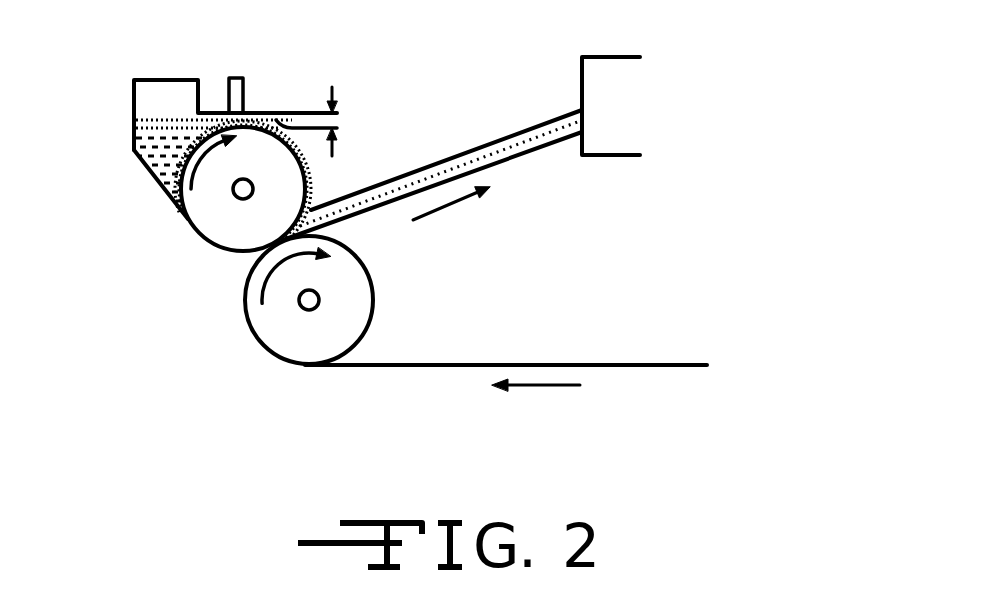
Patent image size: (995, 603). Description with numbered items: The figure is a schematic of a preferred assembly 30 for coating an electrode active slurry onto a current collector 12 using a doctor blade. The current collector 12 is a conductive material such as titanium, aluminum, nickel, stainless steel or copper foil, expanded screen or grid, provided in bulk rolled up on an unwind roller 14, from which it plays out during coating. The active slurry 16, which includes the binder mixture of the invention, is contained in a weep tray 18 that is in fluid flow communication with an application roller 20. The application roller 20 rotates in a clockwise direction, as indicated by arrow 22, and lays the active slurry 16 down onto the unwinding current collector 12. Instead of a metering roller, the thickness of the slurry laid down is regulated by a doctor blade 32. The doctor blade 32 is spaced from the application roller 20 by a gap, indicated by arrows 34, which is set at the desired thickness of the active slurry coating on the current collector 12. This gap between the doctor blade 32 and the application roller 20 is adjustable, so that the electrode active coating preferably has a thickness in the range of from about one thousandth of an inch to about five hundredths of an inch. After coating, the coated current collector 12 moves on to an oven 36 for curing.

The current collector 12 is at (478, 365).
The unwind roller 14 is at (350, 288).
The active slurry 16 is at (168, 107).
The weep tray 18 is at (132, 117).
The application roller 20 is at (217, 222).
The arrow 22 is at (202, 167).
The assembly 30 is at (462, 97).
The doctor blade 32 is at (245, 82).
The arrows 34 is at (342, 120).
The oven 36 is at (609, 147).